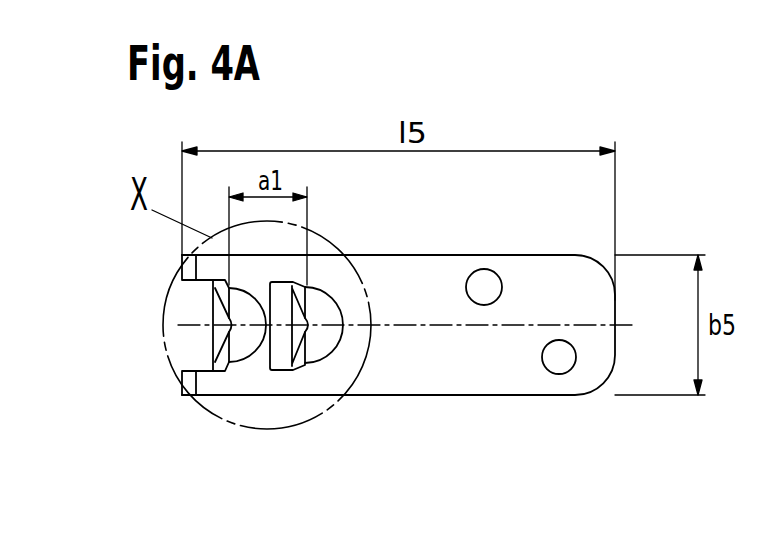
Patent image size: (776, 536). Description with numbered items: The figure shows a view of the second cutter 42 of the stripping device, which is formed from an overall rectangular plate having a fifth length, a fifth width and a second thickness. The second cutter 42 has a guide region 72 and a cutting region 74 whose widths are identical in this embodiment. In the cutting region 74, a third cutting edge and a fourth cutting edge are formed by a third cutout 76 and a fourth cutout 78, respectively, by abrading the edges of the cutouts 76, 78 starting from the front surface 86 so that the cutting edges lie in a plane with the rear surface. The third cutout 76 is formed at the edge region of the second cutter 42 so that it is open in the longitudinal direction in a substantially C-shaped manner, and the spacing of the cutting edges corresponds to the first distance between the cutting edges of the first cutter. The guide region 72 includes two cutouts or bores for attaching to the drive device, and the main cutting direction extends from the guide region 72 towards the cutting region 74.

The second cutter 42 is at (390, 398).
The guide region 72 is at (543, 397).
The cutting region 74 is at (245, 397).
The third cutout 76 is at (198, 342).
The fourth cutout 78 is at (284, 357).
The front surface 86 is at (453, 358).